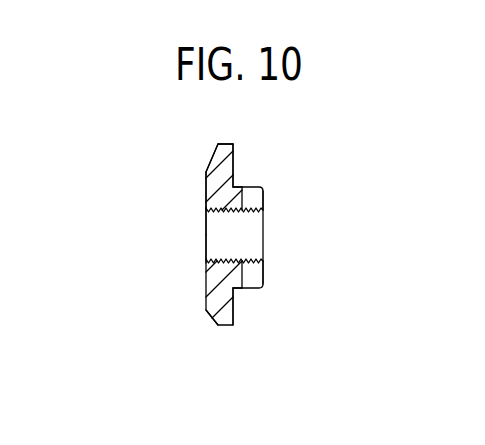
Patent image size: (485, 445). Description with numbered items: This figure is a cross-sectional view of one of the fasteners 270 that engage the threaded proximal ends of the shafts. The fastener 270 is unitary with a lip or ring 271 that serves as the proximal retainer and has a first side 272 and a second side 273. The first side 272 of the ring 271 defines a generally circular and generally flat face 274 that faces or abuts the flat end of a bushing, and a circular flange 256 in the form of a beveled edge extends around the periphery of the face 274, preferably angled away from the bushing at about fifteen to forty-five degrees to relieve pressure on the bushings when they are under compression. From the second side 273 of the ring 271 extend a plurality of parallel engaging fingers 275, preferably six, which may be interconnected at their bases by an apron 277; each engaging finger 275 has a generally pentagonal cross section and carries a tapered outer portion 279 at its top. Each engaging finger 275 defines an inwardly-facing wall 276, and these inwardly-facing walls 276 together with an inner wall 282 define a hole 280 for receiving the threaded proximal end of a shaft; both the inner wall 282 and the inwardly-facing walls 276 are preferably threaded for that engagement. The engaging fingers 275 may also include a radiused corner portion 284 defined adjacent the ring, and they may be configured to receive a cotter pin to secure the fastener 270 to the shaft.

The circular flange 256 is at (210, 321).
The fastener 270 is at (205, 278).
The ring 271 is at (229, 147).
The first side 272 is at (207, 176).
The second side 273 is at (236, 187).
The face 274 is at (206, 204).
The engaging finger 275 is at (263, 191).
The inwardly-facing wall 276 is at (262, 216).
The apron 277 is at (242, 190).
The tapered outer portion 279 is at (244, 290).
The hole 280 is at (207, 217).
The inner wall 282 is at (206, 256).
The radiused corner portion 284 is at (236, 288).